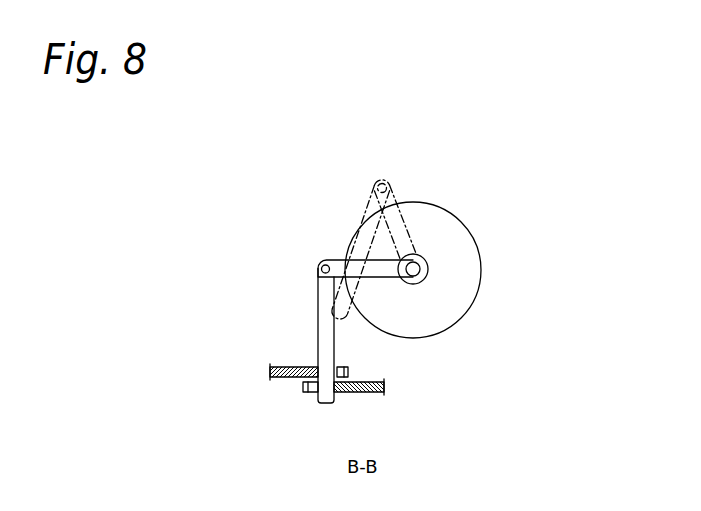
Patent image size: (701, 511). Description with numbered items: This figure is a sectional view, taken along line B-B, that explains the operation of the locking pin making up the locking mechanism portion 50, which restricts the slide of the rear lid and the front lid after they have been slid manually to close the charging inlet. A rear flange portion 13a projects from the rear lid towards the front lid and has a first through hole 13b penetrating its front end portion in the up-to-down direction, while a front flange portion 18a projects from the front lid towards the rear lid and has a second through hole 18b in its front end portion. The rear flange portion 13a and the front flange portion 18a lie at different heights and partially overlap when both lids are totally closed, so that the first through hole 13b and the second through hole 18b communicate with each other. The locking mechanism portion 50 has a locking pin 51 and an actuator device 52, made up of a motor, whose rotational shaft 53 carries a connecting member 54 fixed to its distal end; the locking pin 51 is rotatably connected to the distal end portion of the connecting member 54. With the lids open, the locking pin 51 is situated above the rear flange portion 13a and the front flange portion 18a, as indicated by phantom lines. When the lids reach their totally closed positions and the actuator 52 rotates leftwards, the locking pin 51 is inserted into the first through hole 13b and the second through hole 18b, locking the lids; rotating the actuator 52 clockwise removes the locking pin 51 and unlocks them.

The locking mechanism portion 50 is at (542, 205).
The locking pin 51 is at (322, 332).
The actuator device 52 is at (467, 272).
The rotational shaft 53 is at (422, 280).
The connecting member 54 is at (338, 262).
The rear flange portion 13a is at (285, 380).
The first through hole 13b is at (310, 365).
The front flange portion 18a is at (372, 380).
The second through hole 18b is at (340, 396).